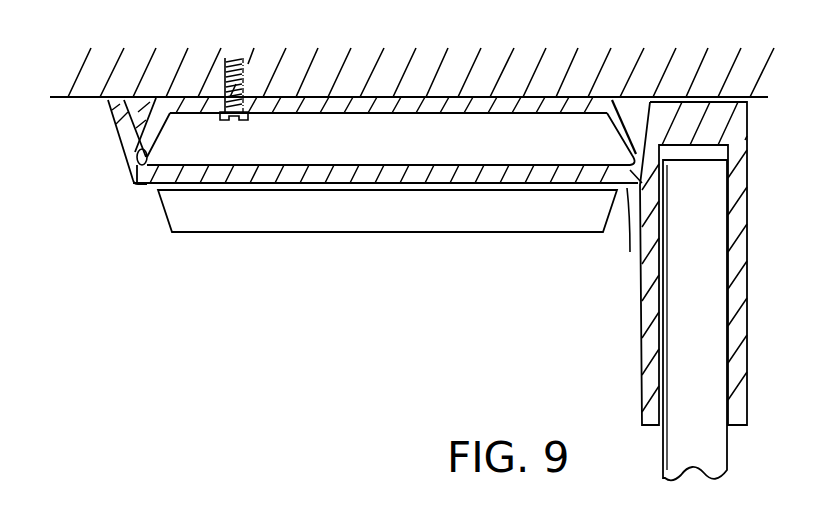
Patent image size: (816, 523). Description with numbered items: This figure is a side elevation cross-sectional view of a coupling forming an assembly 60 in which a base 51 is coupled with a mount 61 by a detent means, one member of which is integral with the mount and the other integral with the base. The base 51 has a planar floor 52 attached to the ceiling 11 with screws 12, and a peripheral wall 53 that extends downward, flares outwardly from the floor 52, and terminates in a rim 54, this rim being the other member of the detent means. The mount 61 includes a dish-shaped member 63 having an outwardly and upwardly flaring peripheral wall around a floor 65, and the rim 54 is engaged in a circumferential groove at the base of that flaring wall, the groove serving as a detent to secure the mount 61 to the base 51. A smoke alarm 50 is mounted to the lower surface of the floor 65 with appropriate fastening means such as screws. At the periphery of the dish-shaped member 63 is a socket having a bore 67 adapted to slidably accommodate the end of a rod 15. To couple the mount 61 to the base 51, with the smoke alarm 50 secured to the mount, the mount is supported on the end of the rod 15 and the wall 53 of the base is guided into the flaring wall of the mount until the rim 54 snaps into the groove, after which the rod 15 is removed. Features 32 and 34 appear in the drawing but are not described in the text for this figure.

The ceiling 11 is at (288, 97).
The screws 12 is at (246, 120).
The rod 15 is at (662, 455).
The loop of clip 32 is at (136, 158).
The clip arm 34 is at (113, 118).
The smoke alarm 50 is at (290, 226).
The base 51 is at (153, 98).
The planar floor 52 is at (500, 113).
The peripheral wall 53 is at (160, 133).
The rim 54 is at (138, 170).
The assembly 60 is at (194, 237).
The mount 61 is at (147, 188).
The dish-shaped member 63 is at (626, 232).
The floor 65 is at (588, 164).
The bore 67 is at (663, 426).